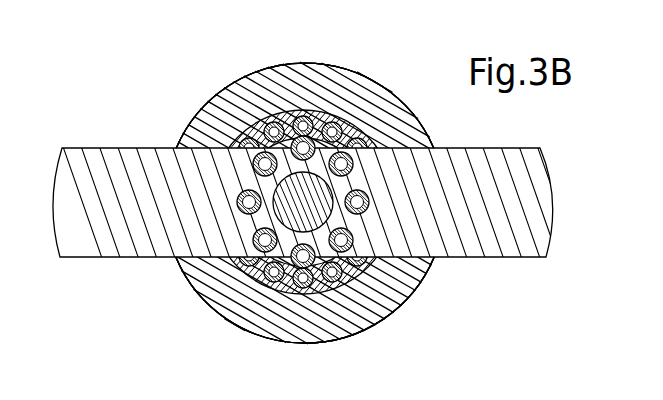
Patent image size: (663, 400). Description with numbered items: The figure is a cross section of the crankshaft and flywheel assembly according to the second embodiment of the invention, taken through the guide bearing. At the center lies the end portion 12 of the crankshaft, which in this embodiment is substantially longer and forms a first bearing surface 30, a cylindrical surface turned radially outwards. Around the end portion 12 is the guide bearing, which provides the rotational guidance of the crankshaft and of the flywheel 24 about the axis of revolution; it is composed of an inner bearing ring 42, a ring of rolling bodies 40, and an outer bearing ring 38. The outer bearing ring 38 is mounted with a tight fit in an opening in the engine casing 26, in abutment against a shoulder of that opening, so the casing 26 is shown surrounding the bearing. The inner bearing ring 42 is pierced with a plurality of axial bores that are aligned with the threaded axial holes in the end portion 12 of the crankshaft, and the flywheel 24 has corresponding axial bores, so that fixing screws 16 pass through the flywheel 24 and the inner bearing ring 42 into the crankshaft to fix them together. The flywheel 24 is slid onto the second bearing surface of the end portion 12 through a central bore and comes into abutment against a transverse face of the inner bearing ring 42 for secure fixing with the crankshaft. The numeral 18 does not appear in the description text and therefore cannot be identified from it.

The end portion 12 is at (196, 114).
The fixing screws 16 is at (254, 158).
The outer jacket surface 18 is at (213, 309).
The flywheel 24 is at (87, 231).
The engine casing 26 is at (250, 329).
The first bearing surface 30 is at (332, 184).
The outer bearing ring 38 is at (236, 80).
The rolling bodies 40 is at (307, 108).
The inner bearing ring 42 is at (288, 112).